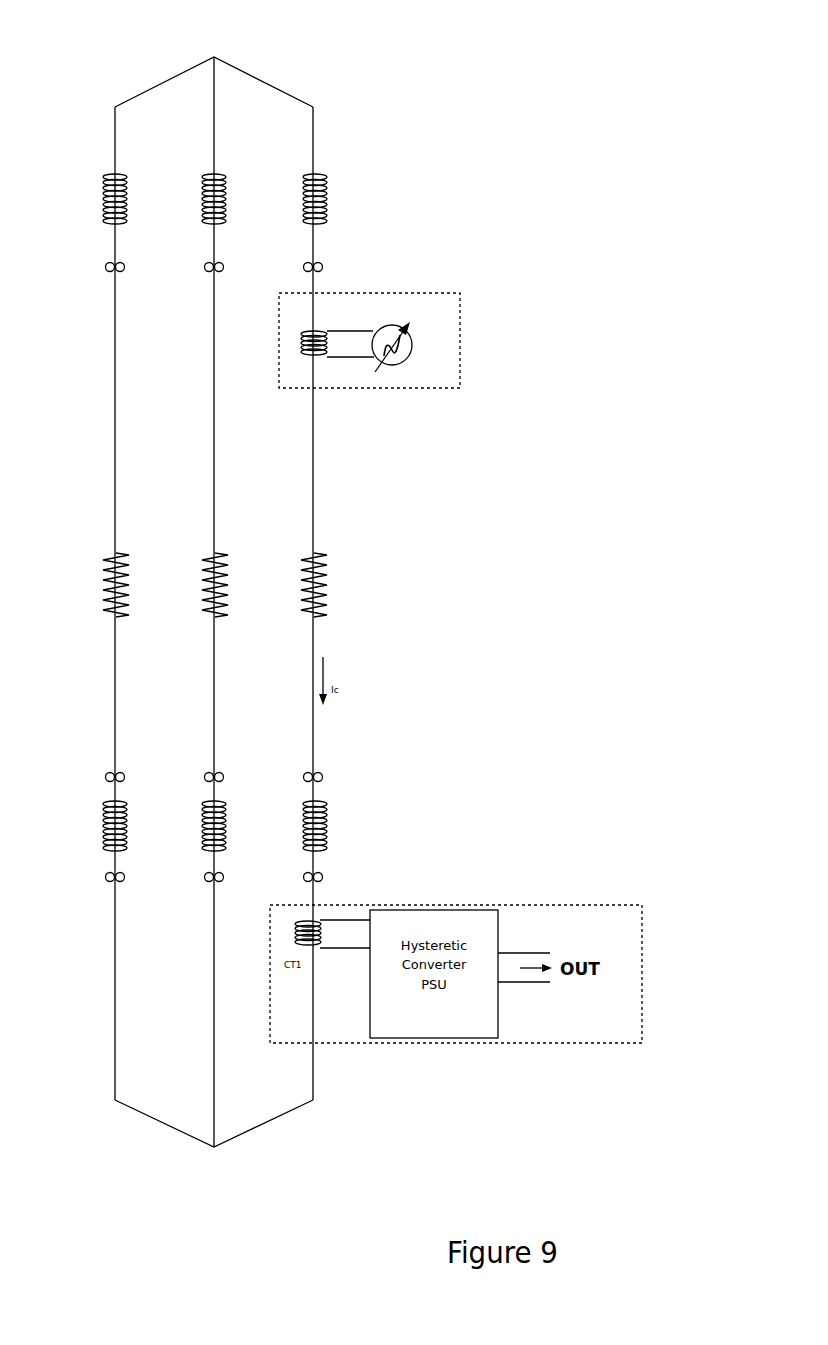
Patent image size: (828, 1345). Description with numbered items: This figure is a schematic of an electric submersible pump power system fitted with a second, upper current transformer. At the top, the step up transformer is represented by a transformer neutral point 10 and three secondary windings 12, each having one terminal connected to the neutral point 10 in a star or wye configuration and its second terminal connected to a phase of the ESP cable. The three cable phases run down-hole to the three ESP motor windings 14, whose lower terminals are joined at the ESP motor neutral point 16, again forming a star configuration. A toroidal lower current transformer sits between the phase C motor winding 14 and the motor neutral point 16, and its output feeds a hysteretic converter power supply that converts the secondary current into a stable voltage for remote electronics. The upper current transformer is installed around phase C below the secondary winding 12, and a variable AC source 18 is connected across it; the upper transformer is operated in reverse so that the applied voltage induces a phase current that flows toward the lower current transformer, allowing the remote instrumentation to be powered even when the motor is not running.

The transformer neutral point 10 is at (218, 52).
The secondary winding 12 is at (127, 205).
The ESP motor winding 14 is at (127, 830).
The ESP motor neutral point 16 is at (214, 1147).
The variable AC source 18 is at (408, 343).